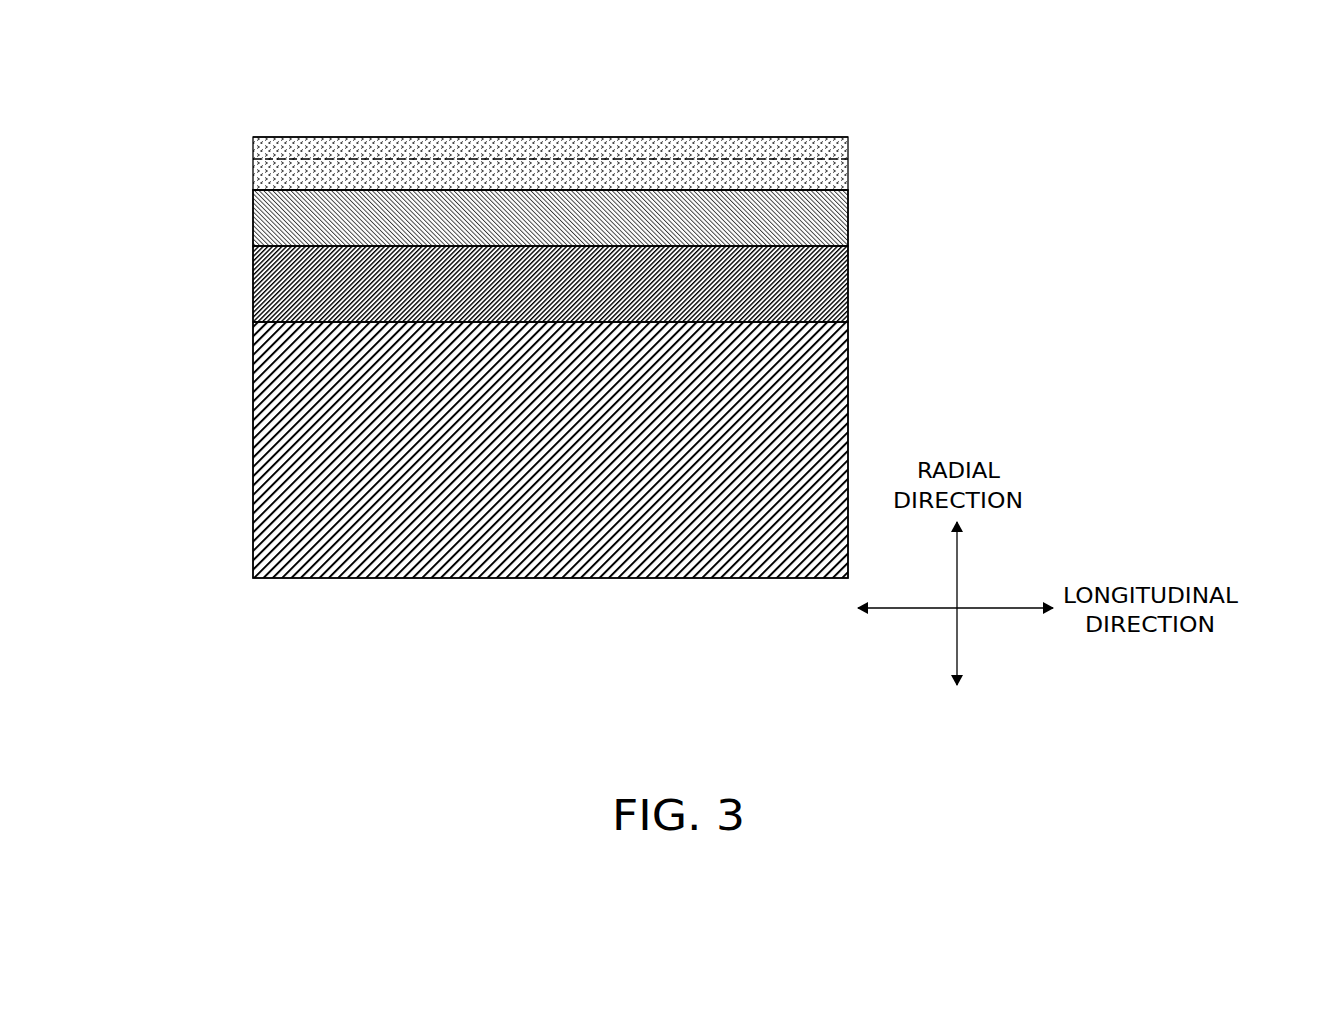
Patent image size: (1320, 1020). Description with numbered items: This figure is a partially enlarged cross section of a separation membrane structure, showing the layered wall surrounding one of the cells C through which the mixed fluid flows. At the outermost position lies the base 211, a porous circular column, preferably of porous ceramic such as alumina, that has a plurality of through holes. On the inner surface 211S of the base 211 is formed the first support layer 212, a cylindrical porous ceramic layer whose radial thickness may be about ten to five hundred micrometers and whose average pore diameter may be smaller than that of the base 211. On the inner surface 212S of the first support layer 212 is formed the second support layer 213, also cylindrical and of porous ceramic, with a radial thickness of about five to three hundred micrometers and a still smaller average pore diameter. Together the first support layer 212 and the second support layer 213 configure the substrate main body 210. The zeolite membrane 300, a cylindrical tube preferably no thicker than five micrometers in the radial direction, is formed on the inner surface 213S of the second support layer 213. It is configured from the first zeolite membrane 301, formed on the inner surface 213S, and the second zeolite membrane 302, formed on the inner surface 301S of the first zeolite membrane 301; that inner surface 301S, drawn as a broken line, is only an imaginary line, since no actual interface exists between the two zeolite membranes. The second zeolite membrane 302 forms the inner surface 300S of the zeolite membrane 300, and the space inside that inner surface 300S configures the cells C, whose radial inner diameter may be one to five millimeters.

The cell C is at (568, 94).
The zeolite membrane 300 is at (654, 146).
The first zeolite membrane 301 is at (848, 166).
The second zeolite membrane 302 is at (848, 147).
The substrate main body 210 is at (654, 384).
The base 211 is at (614, 450).
The first support layer 212 is at (848, 289).
The second support layer 213 is at (848, 216).
The inner surface of the zeolite membrane 300S is at (271, 133).
The inner surface of the first zeolite membrane 301S is at (327, 157).
The inner surface of the second support layer 213S is at (268, 188).
The inner surface of the first support layer 212S is at (270, 243).
The inner surface of the base 211S is at (272, 320).